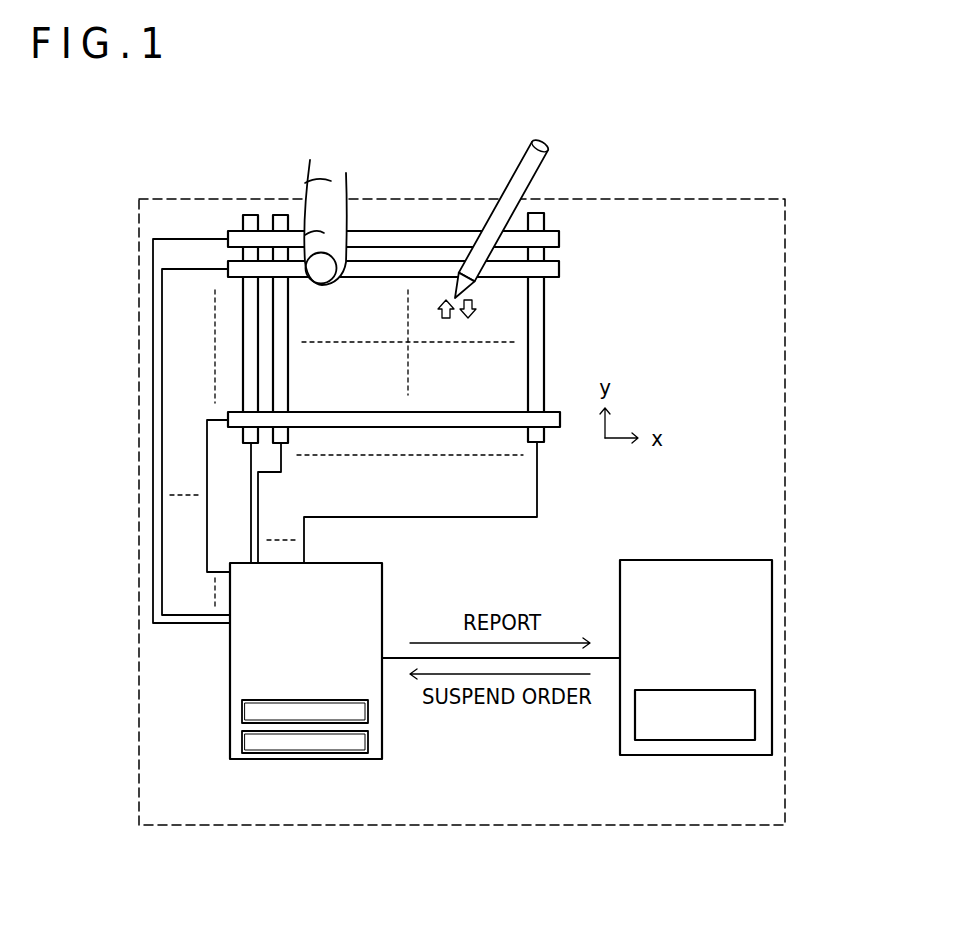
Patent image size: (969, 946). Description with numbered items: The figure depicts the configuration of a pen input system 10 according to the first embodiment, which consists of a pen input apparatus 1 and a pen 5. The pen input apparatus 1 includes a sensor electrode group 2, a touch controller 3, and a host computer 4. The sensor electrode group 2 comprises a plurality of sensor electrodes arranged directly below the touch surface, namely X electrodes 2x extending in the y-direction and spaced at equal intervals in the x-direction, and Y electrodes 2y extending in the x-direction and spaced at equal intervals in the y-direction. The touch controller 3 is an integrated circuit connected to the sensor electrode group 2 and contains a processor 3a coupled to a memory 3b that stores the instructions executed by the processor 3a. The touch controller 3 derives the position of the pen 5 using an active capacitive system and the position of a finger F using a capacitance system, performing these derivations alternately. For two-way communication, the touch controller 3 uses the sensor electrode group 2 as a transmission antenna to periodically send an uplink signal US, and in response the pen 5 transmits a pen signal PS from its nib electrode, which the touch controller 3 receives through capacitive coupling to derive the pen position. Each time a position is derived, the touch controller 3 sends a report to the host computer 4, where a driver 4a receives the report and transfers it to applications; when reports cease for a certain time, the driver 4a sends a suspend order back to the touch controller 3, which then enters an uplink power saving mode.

The pen input apparatus 1 is at (461, 826).
The pen input system 10 is at (670, 127).
The sensor electrode group 2 is at (441, 328).
The X electrodes 2x is at (538, 296).
The Y electrodes 2y is at (553, 267).
The touch controller 3 is at (292, 690).
The processor 3a is at (242, 711).
The memory 3b is at (242, 742).
The host computer 4 is at (696, 686).
The driver 4a is at (733, 742).
The pen 5 is at (541, 140).
The finger F is at (328, 170).
The pen signal PS is at (478, 309).
The uplink signal US is at (446, 321).